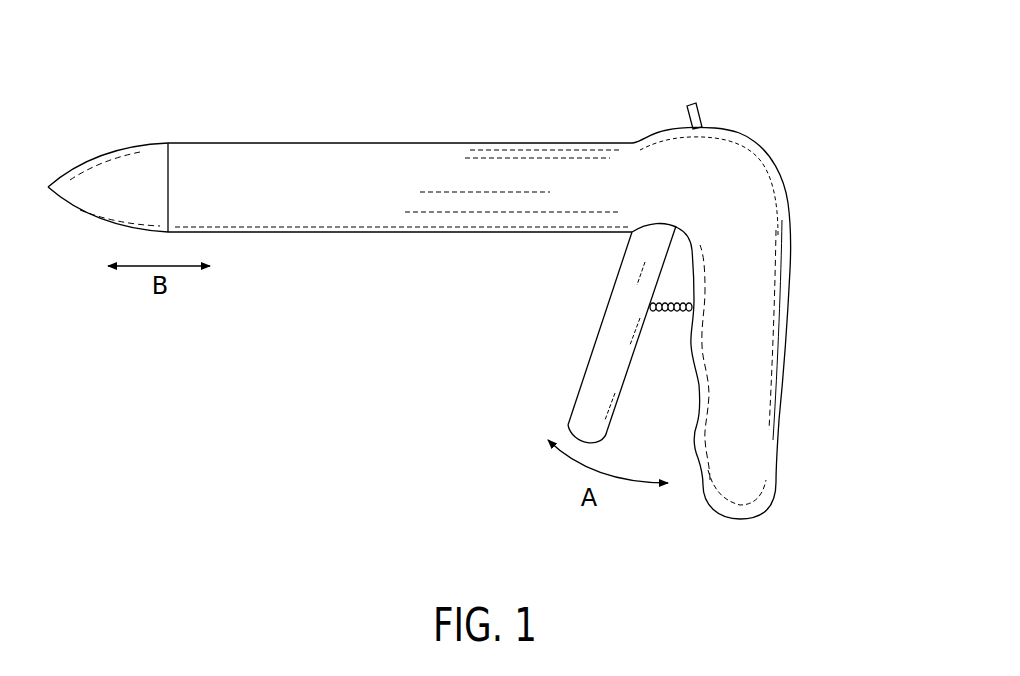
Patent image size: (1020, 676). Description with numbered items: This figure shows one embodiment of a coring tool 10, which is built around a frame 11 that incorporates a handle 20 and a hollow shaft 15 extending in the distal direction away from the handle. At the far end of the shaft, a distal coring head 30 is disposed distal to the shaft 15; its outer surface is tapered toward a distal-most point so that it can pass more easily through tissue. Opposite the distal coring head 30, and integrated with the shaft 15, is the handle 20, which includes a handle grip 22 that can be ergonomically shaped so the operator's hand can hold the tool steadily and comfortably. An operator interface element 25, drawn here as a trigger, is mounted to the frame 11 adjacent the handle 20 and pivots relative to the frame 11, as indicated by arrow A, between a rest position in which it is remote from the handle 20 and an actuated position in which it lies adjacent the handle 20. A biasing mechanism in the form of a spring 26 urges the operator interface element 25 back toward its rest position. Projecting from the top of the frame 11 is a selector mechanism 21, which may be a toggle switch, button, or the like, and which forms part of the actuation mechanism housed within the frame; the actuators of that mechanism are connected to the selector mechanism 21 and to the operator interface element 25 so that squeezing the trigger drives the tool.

The coring tool 10 is at (464, 300).
The frame 11 is at (627, 130).
The hollow shaft 15 is at (340, 143).
The handle 20 is at (783, 366).
The selector mechanism 21 is at (700, 110).
The handle grip 22 is at (700, 458).
The operator interface element 25 is at (575, 398).
The spring 26 is at (668, 313).
The distal coring head 30 is at (97, 153).